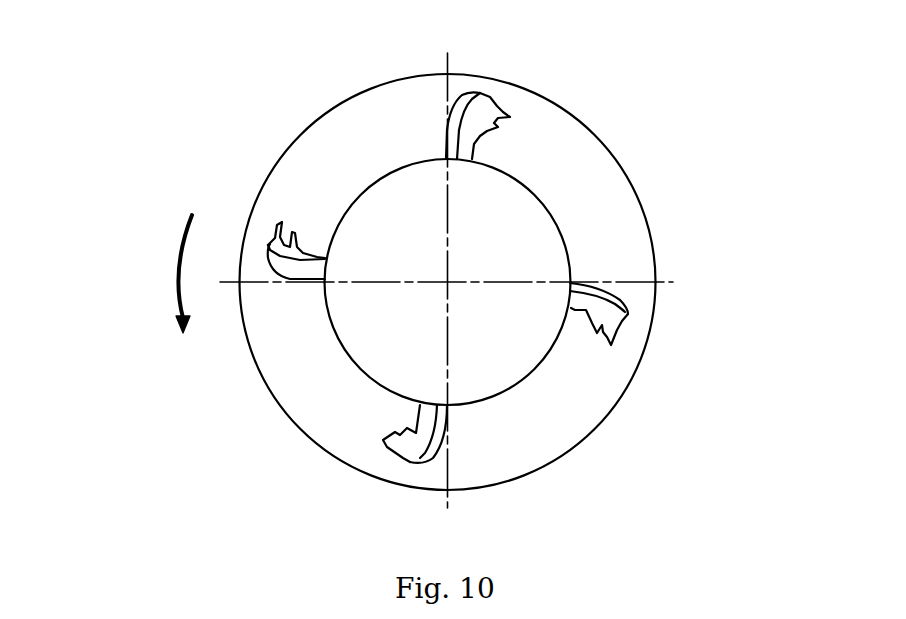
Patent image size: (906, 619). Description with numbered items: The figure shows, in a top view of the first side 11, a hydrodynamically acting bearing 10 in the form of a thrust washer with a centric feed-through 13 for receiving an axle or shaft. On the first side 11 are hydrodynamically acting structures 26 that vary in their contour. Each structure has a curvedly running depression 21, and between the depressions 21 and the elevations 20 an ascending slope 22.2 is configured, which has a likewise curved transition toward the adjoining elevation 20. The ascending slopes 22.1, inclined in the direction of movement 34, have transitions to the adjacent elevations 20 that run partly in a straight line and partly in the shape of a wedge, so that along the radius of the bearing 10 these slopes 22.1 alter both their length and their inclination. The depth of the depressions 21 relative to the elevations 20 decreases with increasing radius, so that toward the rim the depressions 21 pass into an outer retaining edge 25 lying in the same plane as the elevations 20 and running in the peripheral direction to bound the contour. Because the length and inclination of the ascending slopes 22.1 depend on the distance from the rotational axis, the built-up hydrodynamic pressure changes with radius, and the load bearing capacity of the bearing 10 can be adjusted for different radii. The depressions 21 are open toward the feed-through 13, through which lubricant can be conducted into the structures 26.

The hydrodynamically acting bearing 10 is at (130, 108).
The first side 11 is at (332, 138).
The feed-through 13 is at (517, 217).
The elevation 20 is at (598, 222).
The depression 21 is at (541, 88).
The ascending slope 22.1 is at (497, 112).
The ascending slope 22.2 is at (456, 105).
The outer retaining edge 25 is at (637, 320).
The hydrodynamically acting structures 26 is at (275, 237).
The direction of movement 34 is at (177, 275).